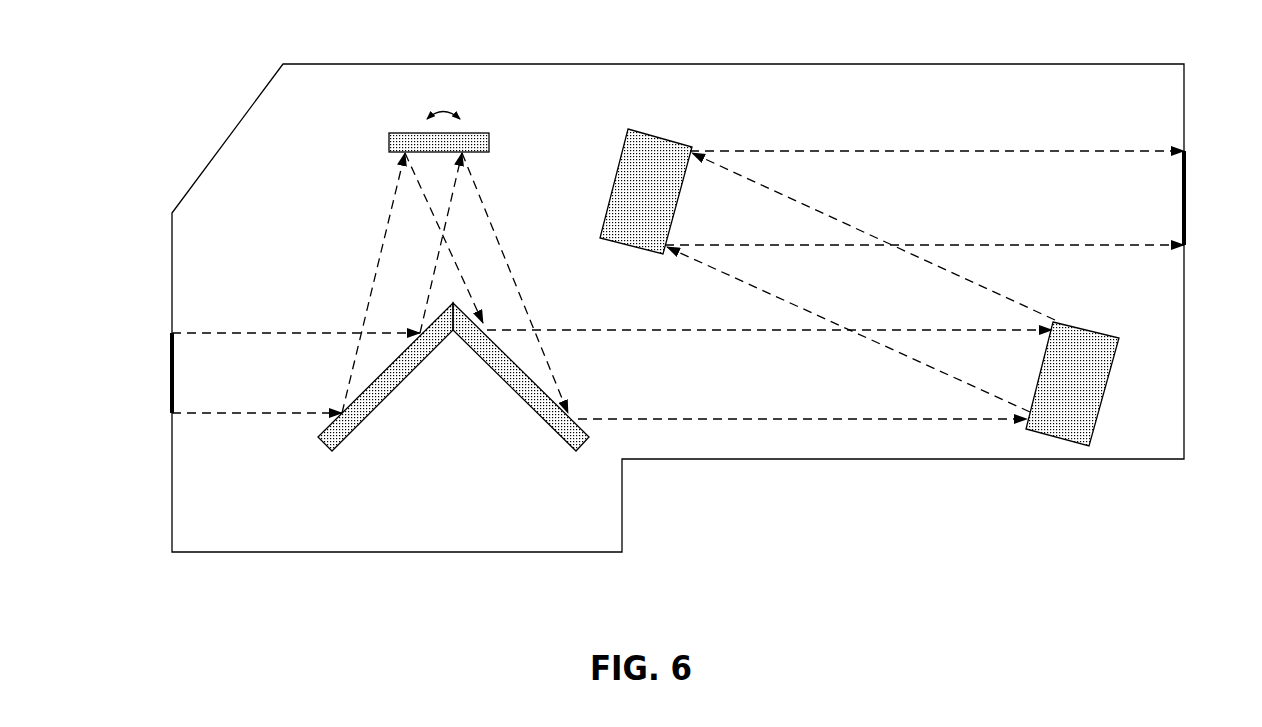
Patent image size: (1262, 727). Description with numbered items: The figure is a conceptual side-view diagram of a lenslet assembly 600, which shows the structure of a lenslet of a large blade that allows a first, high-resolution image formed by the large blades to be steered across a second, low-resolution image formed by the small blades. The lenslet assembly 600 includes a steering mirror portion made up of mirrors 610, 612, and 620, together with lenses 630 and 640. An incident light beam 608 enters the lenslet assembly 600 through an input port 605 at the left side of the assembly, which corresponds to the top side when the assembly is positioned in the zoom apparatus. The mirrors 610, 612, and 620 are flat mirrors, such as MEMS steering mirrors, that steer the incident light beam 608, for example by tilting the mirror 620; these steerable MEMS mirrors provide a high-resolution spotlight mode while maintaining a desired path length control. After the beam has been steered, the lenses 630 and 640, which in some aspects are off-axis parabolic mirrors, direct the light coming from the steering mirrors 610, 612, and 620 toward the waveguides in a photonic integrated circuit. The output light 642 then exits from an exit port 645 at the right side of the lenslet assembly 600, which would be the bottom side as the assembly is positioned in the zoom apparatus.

The lenslet assembly 600 is at (639, 297).
The input port 605 is at (143, 373).
The incident light beam 608 is at (296, 373).
The mirror 610 is at (345, 437).
The mirror 612 is at (585, 435).
The mirror 620 is at (484, 135).
The lens 630 is at (1083, 328).
The lens 640 is at (658, 135).
The output light 642 is at (924, 198).
The exit port 645 is at (1213, 198).